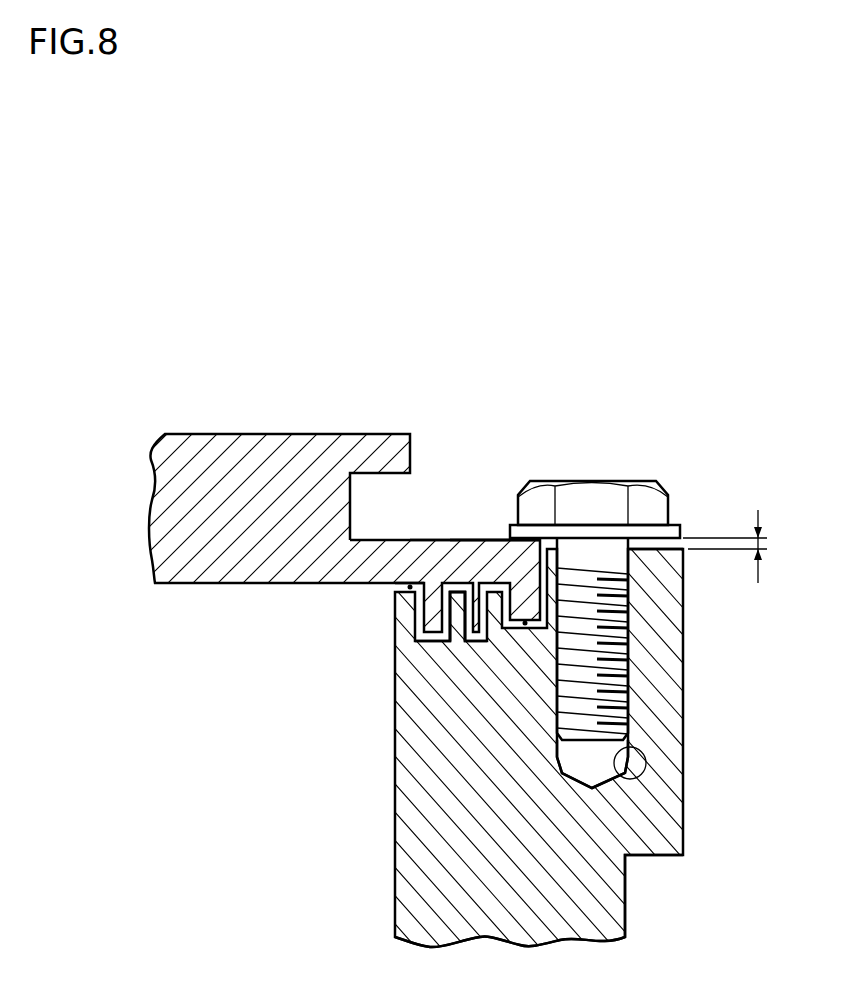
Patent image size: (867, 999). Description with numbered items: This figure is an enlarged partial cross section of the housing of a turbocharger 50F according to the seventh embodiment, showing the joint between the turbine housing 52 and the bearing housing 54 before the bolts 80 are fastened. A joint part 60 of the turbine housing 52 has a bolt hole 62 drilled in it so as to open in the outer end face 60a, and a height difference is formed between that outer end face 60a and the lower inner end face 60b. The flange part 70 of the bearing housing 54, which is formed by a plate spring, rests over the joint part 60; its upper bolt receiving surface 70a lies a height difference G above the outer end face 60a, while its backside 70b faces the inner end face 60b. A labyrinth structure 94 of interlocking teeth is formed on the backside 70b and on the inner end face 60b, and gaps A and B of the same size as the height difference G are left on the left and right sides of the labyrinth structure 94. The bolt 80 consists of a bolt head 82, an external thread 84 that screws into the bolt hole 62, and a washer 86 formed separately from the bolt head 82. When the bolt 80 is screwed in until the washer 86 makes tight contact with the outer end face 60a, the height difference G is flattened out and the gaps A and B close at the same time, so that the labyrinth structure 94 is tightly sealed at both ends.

The turbocharger 50F is at (477, 406).
The turbine housing 52 is at (636, 898).
The bearing housing 54 is at (239, 428).
The joint part 60 is at (684, 650).
The outer end face 60a is at (663, 550).
The inner end face 60b is at (453, 652).
The bolt hole 62 is at (646, 765).
The flange part 70 is at (427, 528).
The bolt receiving surface 70a is at (492, 538).
The backside 70b is at (393, 590).
The bolt 80 is at (630, 575).
The bolt head 82 is at (551, 480).
The external thread 84 is at (598, 685).
The washer 86 is at (676, 524).
The labyrinth structure 94 is at (452, 613).
The height difference G is at (725, 536).
The gap A is at (525, 626).
The gap B is at (408, 590).